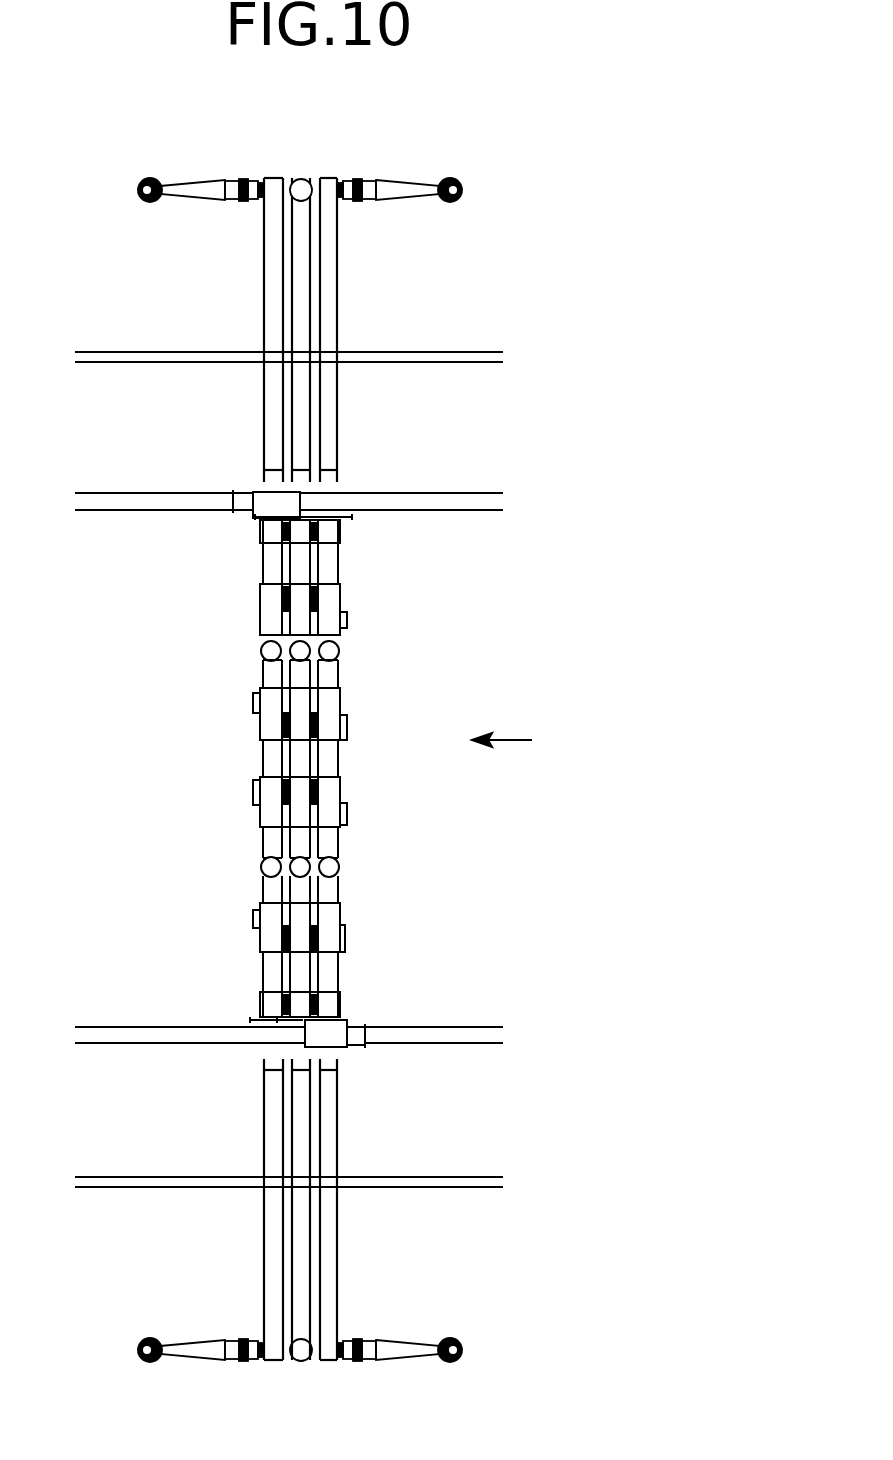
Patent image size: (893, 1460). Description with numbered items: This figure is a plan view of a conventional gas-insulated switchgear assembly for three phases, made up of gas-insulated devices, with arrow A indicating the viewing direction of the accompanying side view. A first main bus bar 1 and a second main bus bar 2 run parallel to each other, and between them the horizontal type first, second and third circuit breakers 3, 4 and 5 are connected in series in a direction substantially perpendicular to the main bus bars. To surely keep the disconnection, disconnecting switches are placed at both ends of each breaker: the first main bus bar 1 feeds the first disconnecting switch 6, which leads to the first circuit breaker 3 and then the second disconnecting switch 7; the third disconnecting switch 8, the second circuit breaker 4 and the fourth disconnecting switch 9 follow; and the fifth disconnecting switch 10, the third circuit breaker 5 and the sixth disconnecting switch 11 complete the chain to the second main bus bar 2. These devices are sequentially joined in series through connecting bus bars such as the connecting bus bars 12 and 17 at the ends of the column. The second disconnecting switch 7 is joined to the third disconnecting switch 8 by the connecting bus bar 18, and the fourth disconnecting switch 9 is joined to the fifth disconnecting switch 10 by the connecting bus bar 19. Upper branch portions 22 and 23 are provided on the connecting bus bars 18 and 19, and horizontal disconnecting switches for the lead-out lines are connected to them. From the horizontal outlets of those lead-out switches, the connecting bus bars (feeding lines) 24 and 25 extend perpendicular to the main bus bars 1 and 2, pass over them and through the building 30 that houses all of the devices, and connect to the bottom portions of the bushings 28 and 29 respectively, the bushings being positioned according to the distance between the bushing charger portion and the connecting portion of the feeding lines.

The first main bus bar 1 is at (476, 1033).
The second main bus bar 2 is at (458, 498).
The first circuit breaker 3 is at (330, 968).
The second circuit breaker 4 is at (330, 760).
The third circuit breaker 5 is at (330, 562).
The first disconnecting switch 6 is at (340, 1038).
The second disconnecting switch 7 is at (272, 940).
The third disconnecting switch 8 is at (272, 803).
The fourth disconnecting switch 9 is at (272, 728).
The fifth disconnecting switch 10 is at (272, 601).
The sixth disconnecting switch 11 is at (275, 502).
The connecting bus bar 12 is at (272, 1010).
The connecting bus bar 17 is at (272, 533).
The connecting bus bar 18 is at (272, 836).
The connecting bus bar 19 is at (272, 680).
The upper branch portion 22 is at (272, 867).
The upper branch portion 23 is at (272, 651).
The connecting bus bar 24 is at (340, 1114).
The connecting bus bar 25 is at (272, 400).
The bushing 28 is at (410, 1347).
The bushing 29 is at (413, 196).
The building 30 is at (132, 355).
The viewing direction arrow A is at (515, 741).